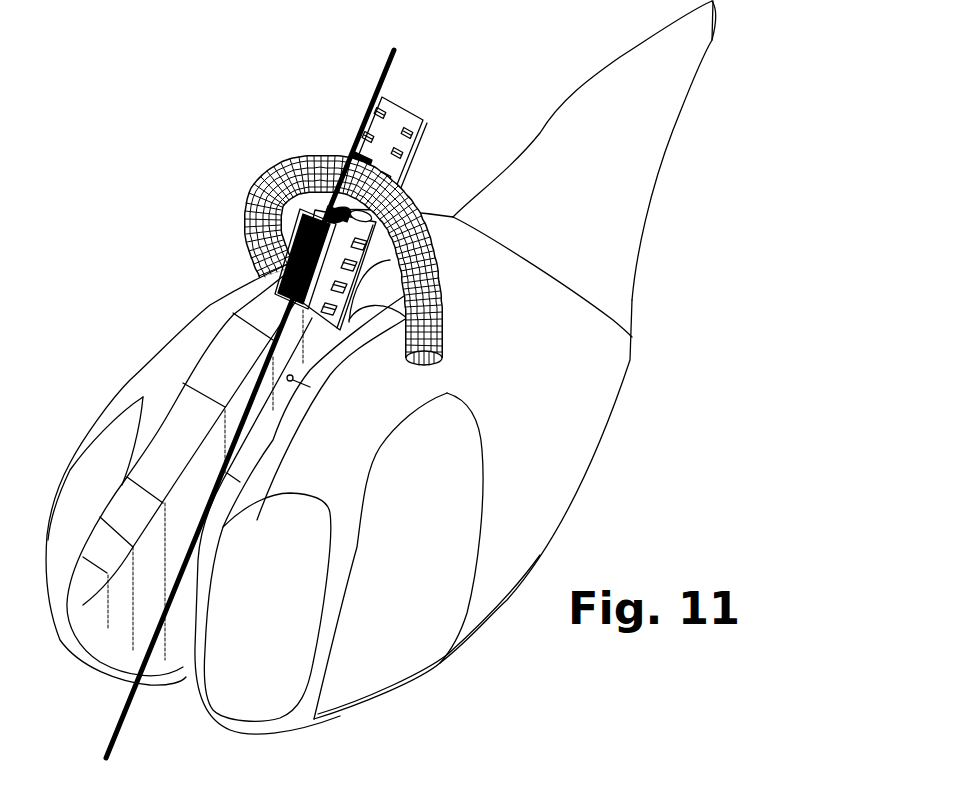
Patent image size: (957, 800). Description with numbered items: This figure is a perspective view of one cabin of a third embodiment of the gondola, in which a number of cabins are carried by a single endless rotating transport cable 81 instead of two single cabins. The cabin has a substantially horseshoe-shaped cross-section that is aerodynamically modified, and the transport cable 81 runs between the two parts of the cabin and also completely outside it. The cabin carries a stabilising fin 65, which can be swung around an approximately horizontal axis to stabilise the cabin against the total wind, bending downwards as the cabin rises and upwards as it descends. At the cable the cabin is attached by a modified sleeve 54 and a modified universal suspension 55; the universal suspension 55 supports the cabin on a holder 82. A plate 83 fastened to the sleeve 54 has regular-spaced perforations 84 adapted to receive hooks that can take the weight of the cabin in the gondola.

The sleeve 54 is at (297, 250).
The universal suspension 55 is at (316, 210).
The stabilising fin 65 is at (637, 168).
The transport cable 81 is at (395, 58).
The holder 82 is at (424, 285).
The plate 83 is at (404, 107).
The perforations 84 is at (350, 225).